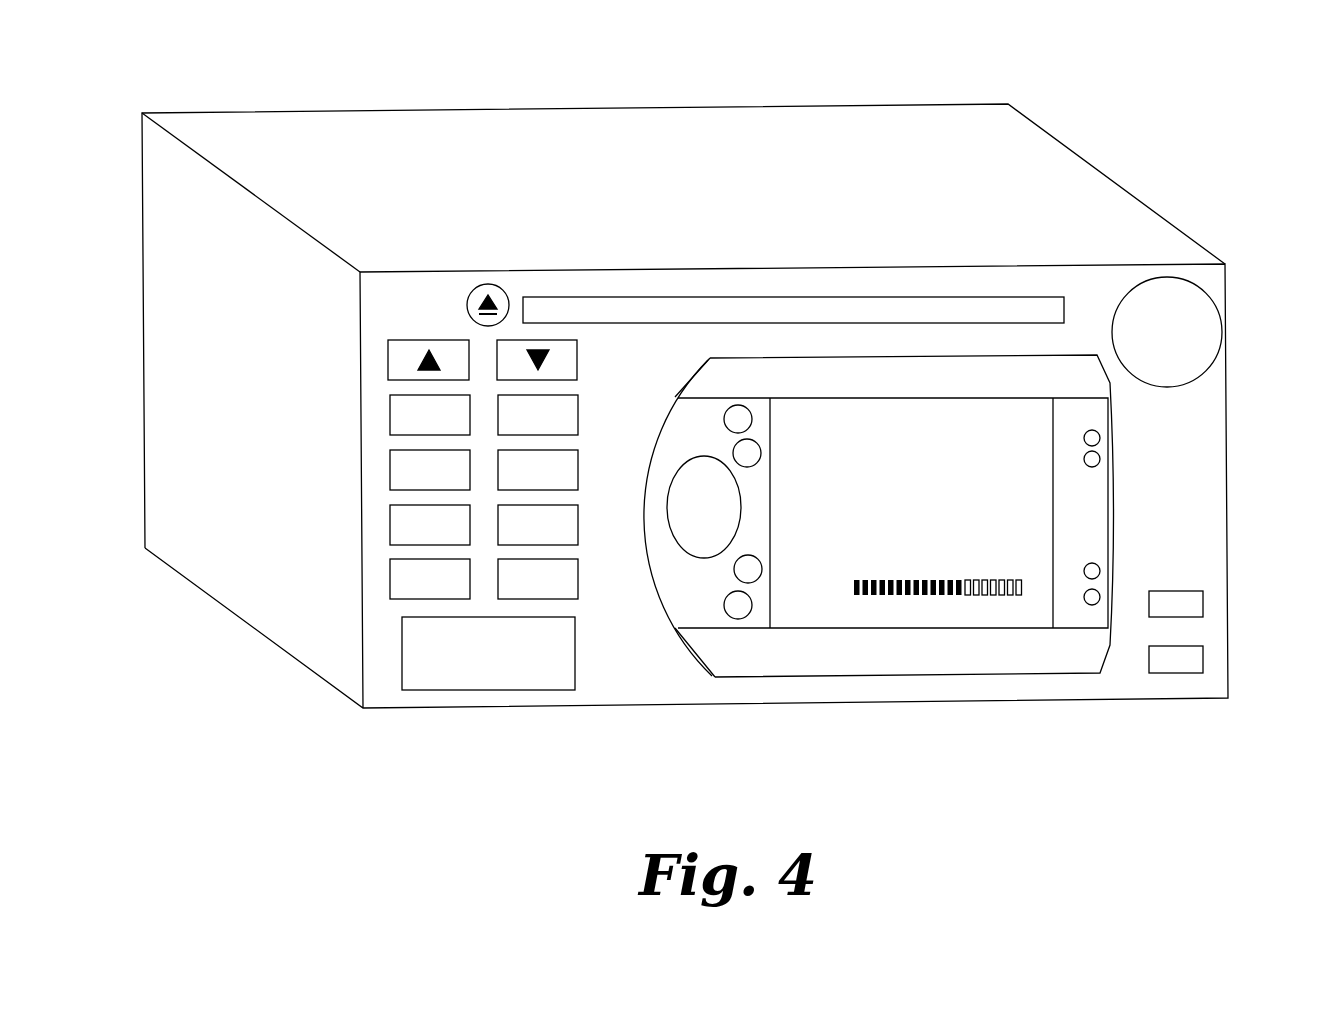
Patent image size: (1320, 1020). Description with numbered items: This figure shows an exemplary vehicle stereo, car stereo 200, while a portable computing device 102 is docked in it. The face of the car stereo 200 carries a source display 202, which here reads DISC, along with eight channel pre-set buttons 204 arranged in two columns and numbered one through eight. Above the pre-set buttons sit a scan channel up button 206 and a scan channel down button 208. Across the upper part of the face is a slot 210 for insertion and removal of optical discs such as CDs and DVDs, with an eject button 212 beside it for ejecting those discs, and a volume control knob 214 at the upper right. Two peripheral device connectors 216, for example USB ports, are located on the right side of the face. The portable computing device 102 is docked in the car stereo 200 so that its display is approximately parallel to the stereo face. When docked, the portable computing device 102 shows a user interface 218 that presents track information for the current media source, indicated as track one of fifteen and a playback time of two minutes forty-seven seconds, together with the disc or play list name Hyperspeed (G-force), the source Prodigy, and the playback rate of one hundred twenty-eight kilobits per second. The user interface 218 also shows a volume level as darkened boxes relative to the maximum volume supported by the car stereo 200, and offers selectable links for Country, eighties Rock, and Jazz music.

The car stereo 200 is at (158, 95).
The eject button 212 is at (475, 292).
The slot 210 is at (628, 300).
The volume control knob 214 is at (1205, 301).
The scan channel up button 206 is at (393, 353).
The scan channel down button 208 is at (497, 343).
The channel pre-set buttons 204 is at (380, 390).
The source display 202 is at (437, 685).
The portable computing device 102 is at (667, 645).
The user interface 218 is at (907, 615).
The peripheral device connectors 216 is at (1200, 595).